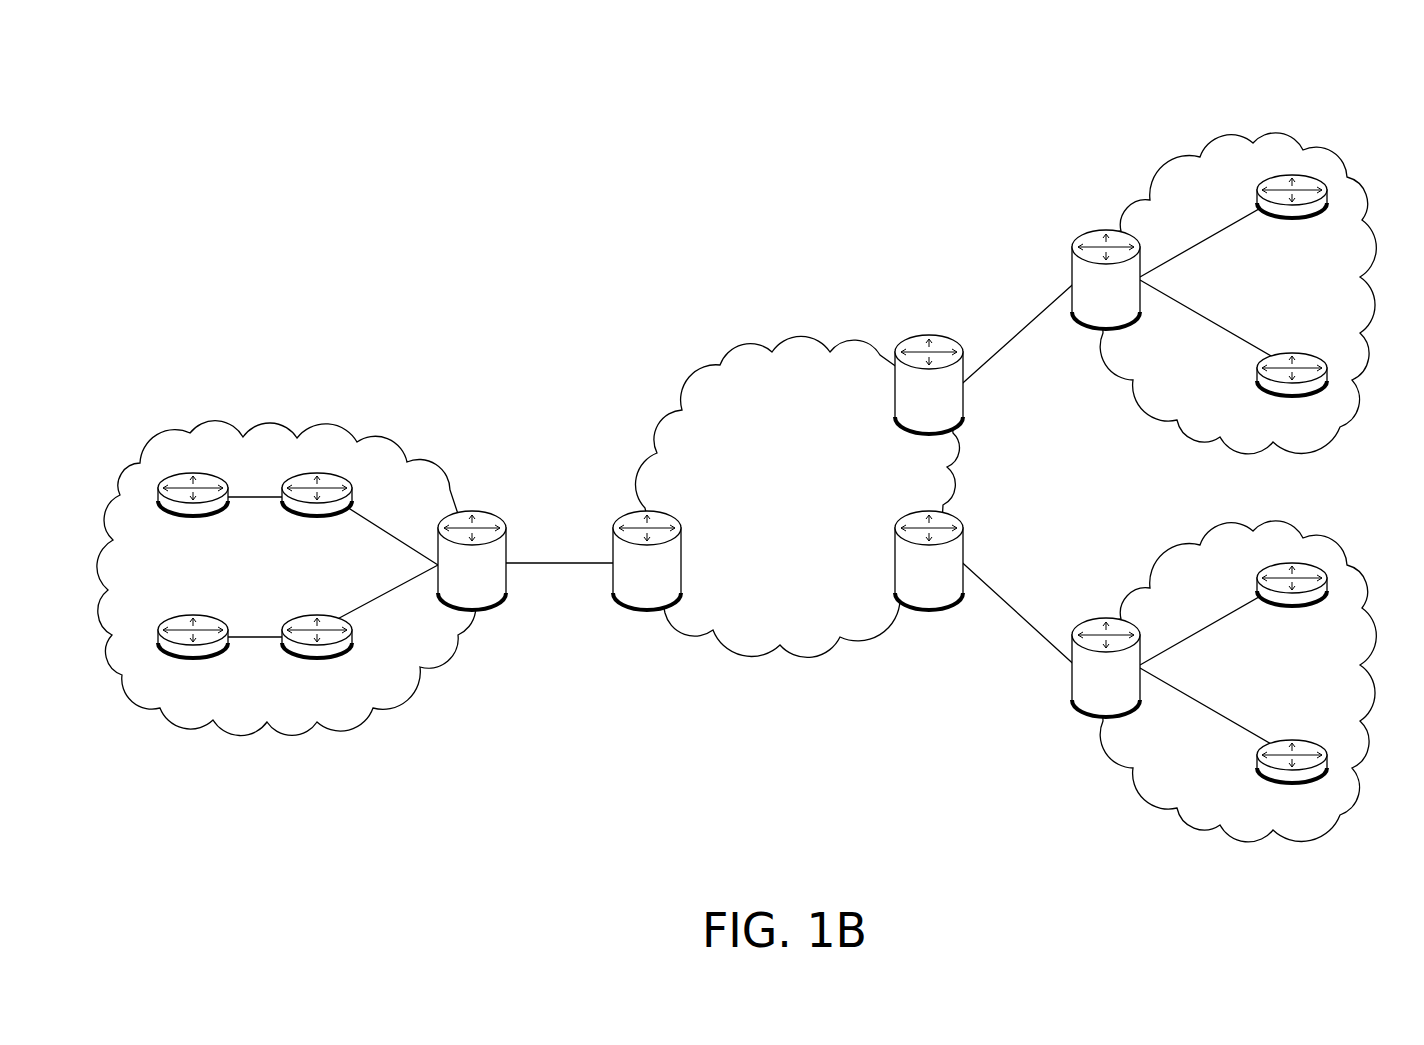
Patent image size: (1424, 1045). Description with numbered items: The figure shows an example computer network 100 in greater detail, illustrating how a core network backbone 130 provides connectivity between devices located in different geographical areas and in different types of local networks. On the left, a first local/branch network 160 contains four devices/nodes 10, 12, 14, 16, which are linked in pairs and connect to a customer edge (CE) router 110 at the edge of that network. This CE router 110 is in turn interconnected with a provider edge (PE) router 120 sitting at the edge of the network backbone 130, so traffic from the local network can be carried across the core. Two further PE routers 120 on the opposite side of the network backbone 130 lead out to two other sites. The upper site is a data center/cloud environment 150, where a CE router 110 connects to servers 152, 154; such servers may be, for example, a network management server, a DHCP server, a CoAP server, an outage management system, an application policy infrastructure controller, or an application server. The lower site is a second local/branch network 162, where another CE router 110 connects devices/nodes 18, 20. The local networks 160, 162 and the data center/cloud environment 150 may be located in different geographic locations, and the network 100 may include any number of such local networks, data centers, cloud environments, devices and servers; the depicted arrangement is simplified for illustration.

The computer network 100 is at (1341, 76).
The customer edge (CE) router 110 is at (455, 599).
The provider edge (PE) router 120 is at (631, 601).
The network backbone 130 is at (812, 517).
The data center/cloud environment 150 is at (1191, 155).
The server 152 is at (1292, 214).
The server 154 is at (1292, 390).
The local/branch network 160 is at (339, 417).
The local/branch network 162 is at (1121, 772).
The device/node 10 is at (193, 513).
The device/node 12 is at (317, 513).
The device/node 14 is at (193, 654).
The device/node 16 is at (317, 654).
The device/node 18 is at (1292, 778).
The device/node 20 is at (1292, 601).